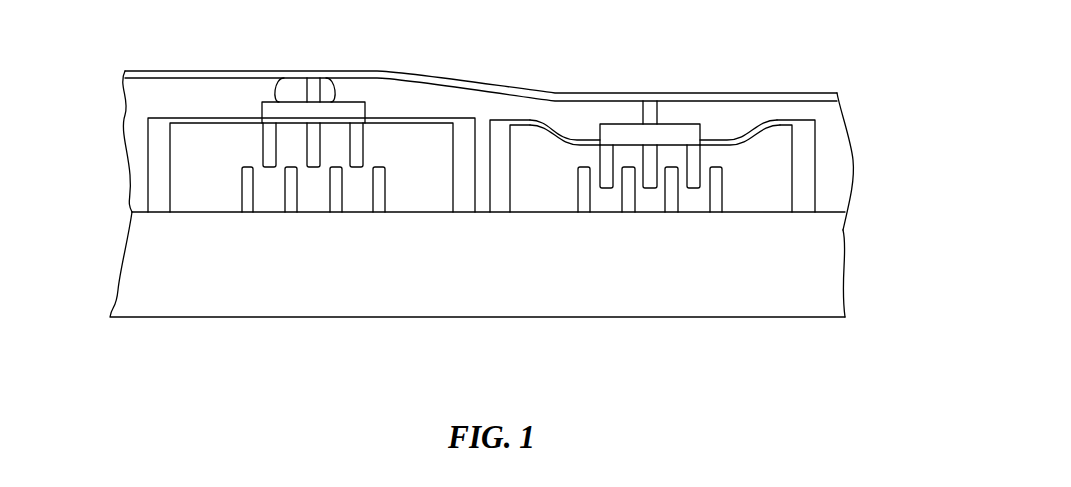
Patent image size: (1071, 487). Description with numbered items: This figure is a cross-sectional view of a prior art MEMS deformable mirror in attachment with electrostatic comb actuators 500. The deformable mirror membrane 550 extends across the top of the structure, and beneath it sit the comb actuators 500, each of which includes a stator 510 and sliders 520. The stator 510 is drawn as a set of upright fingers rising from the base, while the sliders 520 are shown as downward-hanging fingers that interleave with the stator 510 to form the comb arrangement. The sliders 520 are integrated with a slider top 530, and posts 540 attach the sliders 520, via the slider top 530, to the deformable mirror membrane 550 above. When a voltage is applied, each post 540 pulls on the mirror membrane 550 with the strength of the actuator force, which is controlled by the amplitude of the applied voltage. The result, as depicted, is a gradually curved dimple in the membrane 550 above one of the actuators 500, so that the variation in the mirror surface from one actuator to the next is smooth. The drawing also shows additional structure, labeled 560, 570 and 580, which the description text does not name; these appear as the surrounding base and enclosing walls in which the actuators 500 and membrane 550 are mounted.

The electrostatic comb actuators 500 is at (872, 161).
The stator 510 is at (243, 213).
The sliders 520 is at (365, 145).
The slider top 530 is at (284, 78).
The posts 540 is at (322, 95).
The deformable mirror membrane 550 is at (455, 79).
The membrane 560 is at (561, 134).
The substrate 570 is at (118, 247).
The chamber wall 580 is at (149, 161).